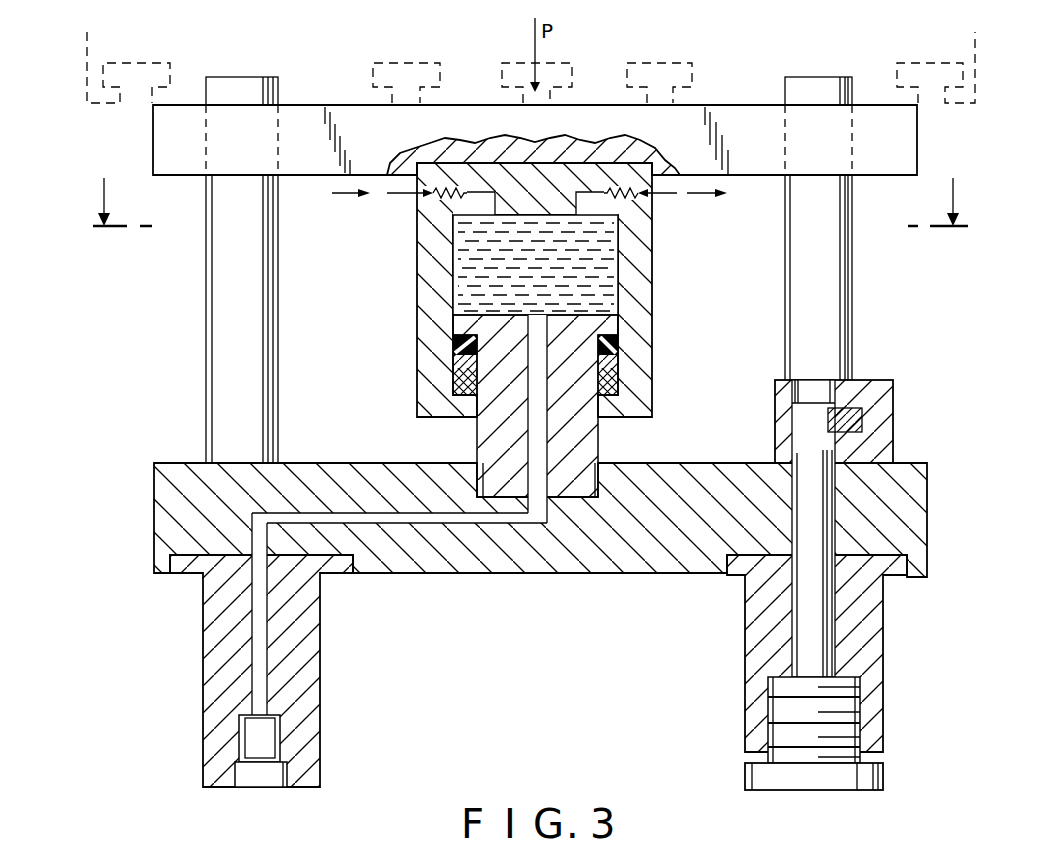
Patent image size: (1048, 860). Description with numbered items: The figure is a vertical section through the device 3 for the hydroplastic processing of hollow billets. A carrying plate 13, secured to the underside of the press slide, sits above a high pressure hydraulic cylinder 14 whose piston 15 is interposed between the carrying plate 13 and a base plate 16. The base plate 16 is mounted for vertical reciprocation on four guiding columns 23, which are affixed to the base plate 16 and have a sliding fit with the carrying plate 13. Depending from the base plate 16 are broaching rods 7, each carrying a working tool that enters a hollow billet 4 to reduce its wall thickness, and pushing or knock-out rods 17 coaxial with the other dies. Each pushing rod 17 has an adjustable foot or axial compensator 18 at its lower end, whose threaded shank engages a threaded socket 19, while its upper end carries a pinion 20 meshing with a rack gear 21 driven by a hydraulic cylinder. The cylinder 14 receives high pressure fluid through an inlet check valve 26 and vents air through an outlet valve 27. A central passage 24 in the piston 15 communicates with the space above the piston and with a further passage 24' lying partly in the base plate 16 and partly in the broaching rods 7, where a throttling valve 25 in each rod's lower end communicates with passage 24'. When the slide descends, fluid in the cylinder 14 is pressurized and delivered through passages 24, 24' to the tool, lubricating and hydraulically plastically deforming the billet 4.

The device for the hydroplastic processing of hollow billets 3 is at (977, 136).
The hollow billet 4 is at (530, 187).
The broaching rod 7 is at (232, 674).
The carrying plate 13 is at (320, 153).
The high pressure hydraulic cylinder 14 is at (643, 308).
The piston 15 is at (587, 450).
The base plate 16 is at (913, 493).
The pushing or knock-out rod 17 is at (868, 658).
The adjustable foot or axial compensator 18 is at (885, 775).
The threaded socket 19 is at (852, 733).
The pinion 20 is at (815, 413).
The rack gear 21 is at (855, 418).
The guiding columns 23 is at (208, 284).
The central passage 24 is at (483, 419).
The further passage 24' is at (399, 566).
The throttling valve 25 is at (263, 737).
The inlet check valve 26 is at (422, 200).
The outlet valve 27 is at (646, 202).